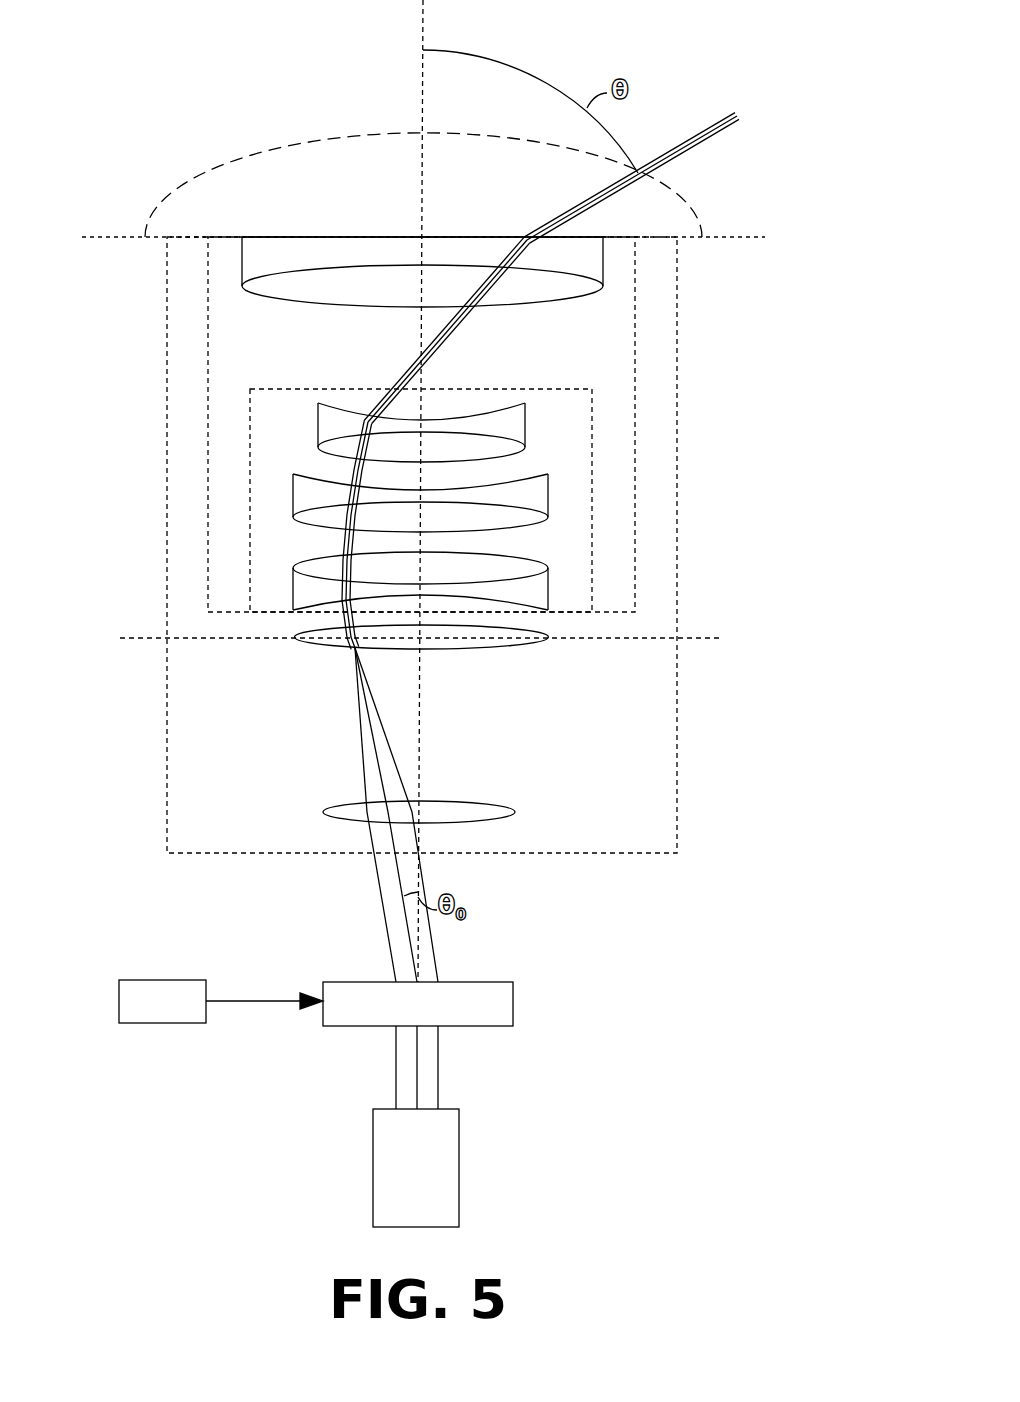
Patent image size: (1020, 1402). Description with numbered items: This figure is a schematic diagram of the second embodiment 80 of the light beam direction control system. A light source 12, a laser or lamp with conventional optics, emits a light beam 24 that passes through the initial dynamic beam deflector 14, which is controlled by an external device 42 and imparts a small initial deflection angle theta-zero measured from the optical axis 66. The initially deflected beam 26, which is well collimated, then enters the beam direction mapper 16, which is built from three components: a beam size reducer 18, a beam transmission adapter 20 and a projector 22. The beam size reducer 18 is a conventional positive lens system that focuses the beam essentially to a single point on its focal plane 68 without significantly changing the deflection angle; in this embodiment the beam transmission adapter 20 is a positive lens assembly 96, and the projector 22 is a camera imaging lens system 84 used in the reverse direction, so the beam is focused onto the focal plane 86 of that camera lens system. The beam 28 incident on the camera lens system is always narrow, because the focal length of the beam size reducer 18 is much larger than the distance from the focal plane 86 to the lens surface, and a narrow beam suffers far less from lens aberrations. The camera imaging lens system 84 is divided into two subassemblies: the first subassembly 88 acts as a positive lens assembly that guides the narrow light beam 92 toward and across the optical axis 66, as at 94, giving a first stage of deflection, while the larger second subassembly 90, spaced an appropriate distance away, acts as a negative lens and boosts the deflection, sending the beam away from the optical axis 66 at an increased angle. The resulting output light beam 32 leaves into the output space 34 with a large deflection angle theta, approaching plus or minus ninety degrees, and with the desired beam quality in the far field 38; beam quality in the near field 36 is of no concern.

The light source 12 is at (462, 1173).
The initial dynamic beam deflector 14 is at (515, 1005).
The beam direction mapper 16 is at (166, 510).
The beam size reducer 18 is at (338, 791).
The beam transmission adapter 20 is at (308, 655).
The projector 22 is at (201, 445).
The light beam 24 is at (420, 1090).
The initially deflected beam 26 is at (393, 877).
The incident beam 28 is at (370, 740).
The output light beam 32 is at (679, 153).
The output space 34 is at (235, 175).
The near field 36 is at (267, 214).
The far field 38 is at (203, 139).
The external device 42 is at (118, 1000).
The optical axis 66 is at (421, 101).
The focal plane 68 is at (610, 640).
The second embodiment 80 is at (841, 346).
The camera imaging lens system 84 is at (207, 380).
The focal plane 86 is at (697, 639).
The first subassembly 88 is at (249, 472).
The second subassembly 90 is at (277, 293).
The narrow light beam 92 is at (457, 333).
The axis crossing 94 is at (417, 363).
The positive lens assembly 96 is at (463, 650).